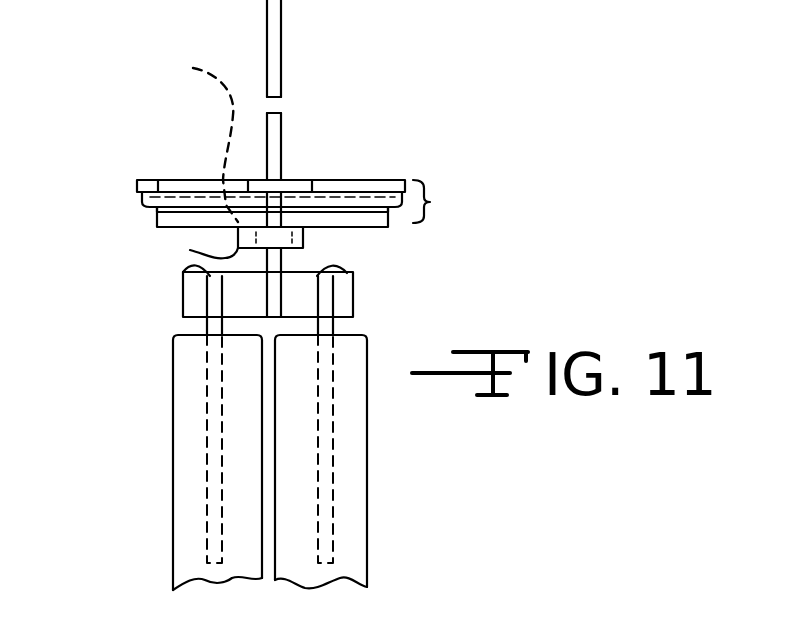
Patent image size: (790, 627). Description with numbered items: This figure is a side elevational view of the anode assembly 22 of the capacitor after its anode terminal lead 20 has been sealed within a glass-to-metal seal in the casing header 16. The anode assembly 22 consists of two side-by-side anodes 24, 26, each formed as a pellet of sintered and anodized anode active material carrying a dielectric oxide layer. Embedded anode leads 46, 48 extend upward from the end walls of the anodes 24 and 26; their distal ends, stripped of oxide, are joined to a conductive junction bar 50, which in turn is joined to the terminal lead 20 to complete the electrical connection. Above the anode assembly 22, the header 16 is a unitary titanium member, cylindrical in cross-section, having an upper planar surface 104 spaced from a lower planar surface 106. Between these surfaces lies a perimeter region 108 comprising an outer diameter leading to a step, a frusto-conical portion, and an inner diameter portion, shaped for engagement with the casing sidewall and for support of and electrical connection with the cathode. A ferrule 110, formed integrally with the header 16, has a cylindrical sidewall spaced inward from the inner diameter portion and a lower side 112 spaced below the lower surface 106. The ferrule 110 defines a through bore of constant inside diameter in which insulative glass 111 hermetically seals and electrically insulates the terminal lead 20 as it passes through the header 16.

The casing header 16 is at (333, 179).
The anode terminal lead 20 is at (283, 137).
The anode assembly 22 is at (302, 418).
The anode 24 is at (183, 508).
The anode 26 is at (347, 482).
The anode lead 46 is at (186, 266).
The anode lead 48 is at (333, 266).
The conductive junction bar 50 is at (183, 300).
The upper planar surface 104 is at (148, 180).
The lower planar surface 106 is at (165, 227).
The perimeter region 108 is at (268, 162).
The ferrule 110 is at (305, 230).
The insulative glass 111 is at (194, 139).
The lower side 112 is at (190, 250).